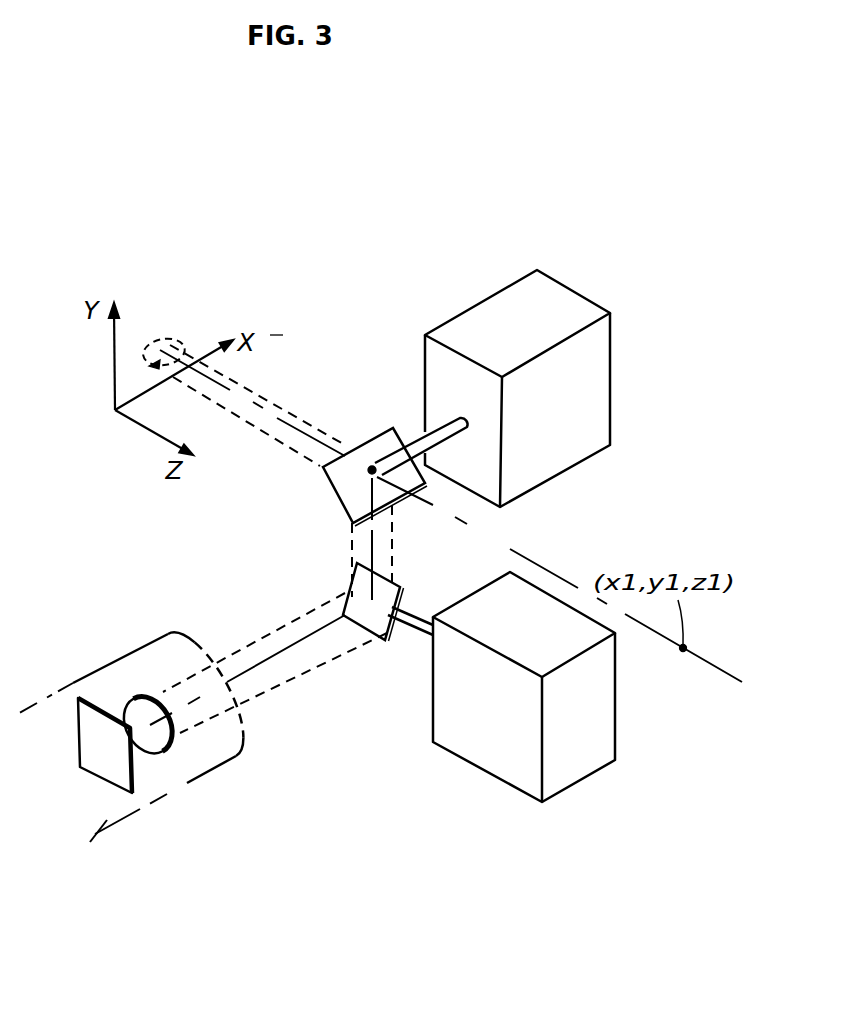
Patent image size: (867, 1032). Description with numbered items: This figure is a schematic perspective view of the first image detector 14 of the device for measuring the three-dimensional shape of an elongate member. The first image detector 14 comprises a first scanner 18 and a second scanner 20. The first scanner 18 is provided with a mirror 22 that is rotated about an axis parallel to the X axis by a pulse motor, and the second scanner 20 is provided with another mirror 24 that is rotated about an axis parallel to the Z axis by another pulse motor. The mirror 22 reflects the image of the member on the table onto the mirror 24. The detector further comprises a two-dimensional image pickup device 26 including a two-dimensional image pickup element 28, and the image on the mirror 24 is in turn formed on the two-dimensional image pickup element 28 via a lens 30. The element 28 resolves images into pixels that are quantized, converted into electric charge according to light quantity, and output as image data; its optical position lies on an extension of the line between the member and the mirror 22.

The first image detector 14 is at (321, 796).
The first scanner 18 is at (583, 447).
The second scanner 20 is at (475, 740).
The mirror 22 is at (380, 448).
The mirror 24 is at (375, 640).
The two-dimensional image pickup device 26 is at (105, 843).
The two-dimensional image pickup element 28 is at (130, 790).
The lens 30 is at (165, 748).